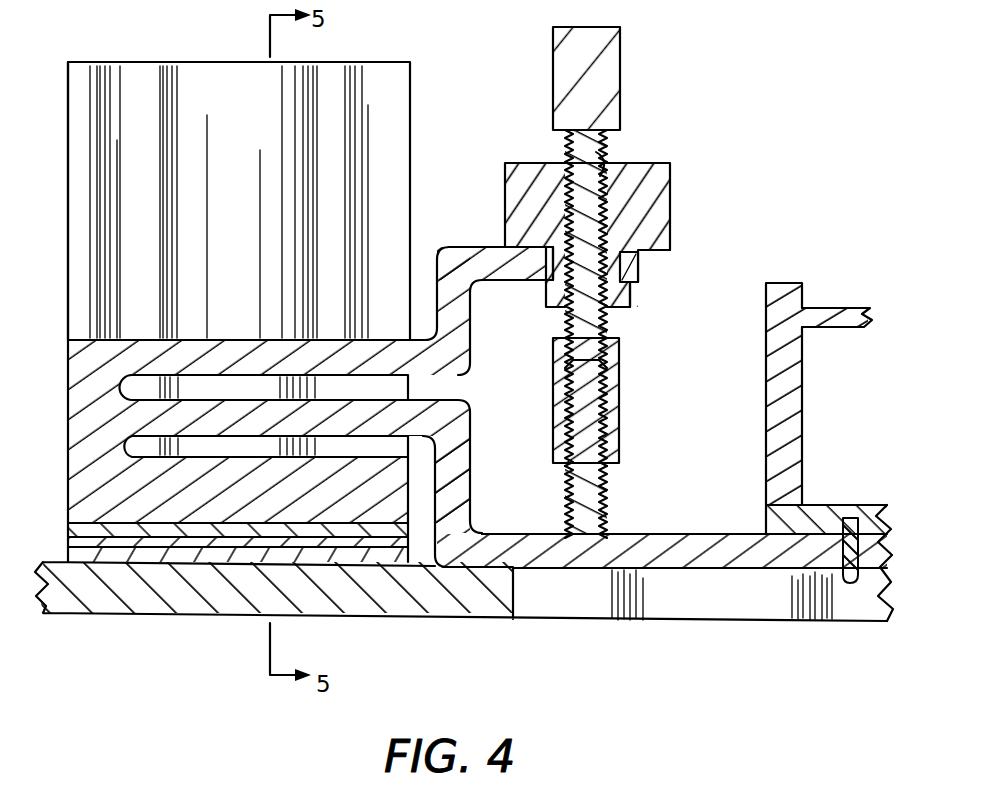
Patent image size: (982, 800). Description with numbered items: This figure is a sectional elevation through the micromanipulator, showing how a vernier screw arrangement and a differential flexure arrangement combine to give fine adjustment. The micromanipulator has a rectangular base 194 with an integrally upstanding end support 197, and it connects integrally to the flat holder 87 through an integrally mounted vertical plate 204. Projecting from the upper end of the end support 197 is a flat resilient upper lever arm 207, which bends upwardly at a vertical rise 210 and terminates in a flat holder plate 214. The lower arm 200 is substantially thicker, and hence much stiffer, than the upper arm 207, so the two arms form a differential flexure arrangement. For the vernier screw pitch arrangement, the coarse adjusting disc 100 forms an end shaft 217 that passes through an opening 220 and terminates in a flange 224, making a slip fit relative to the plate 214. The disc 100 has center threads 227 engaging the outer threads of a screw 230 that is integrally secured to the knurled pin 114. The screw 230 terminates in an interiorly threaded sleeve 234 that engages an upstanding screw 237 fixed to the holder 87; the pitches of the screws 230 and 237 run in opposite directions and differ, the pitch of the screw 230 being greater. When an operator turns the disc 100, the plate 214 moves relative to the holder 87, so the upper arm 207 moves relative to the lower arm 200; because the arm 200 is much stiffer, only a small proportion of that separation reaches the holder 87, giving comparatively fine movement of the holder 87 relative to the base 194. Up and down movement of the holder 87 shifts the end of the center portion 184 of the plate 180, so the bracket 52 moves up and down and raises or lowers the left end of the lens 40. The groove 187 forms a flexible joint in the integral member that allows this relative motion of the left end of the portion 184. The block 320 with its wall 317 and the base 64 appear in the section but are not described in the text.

The lens 40 is at (834, 312).
The bracket 52 is at (826, 515).
The base substrate 64 is at (360, 602).
The flat holder 87 is at (509, 541).
The coarse adjusting disc 100 is at (668, 186).
The knurled pin 114 is at (616, 66).
The plate 180 is at (888, 620).
The center portion 184 is at (737, 557).
The groove 187 is at (668, 542).
The rectangular base 194 is at (86, 496).
The end support 197 is at (84, 386).
The lower arm 200 is at (448, 400).
The vertical plate 204 is at (470, 492).
The upper lever arm 207 is at (263, 340).
The vertical rise 210 is at (467, 320).
The flat holder plate 214 is at (480, 256).
The end shaft 217 is at (612, 258).
The opening 220 is at (640, 268).
The flange 224 is at (631, 302).
The center threads 227 is at (605, 152).
The screw 230 is at (578, 190).
The interiorly threaded sleeve 234 is at (614, 392).
The upstanding screw 237 is at (604, 482).
The housing wall 317 is at (75, 206).
The housing block 320 is at (398, 143).